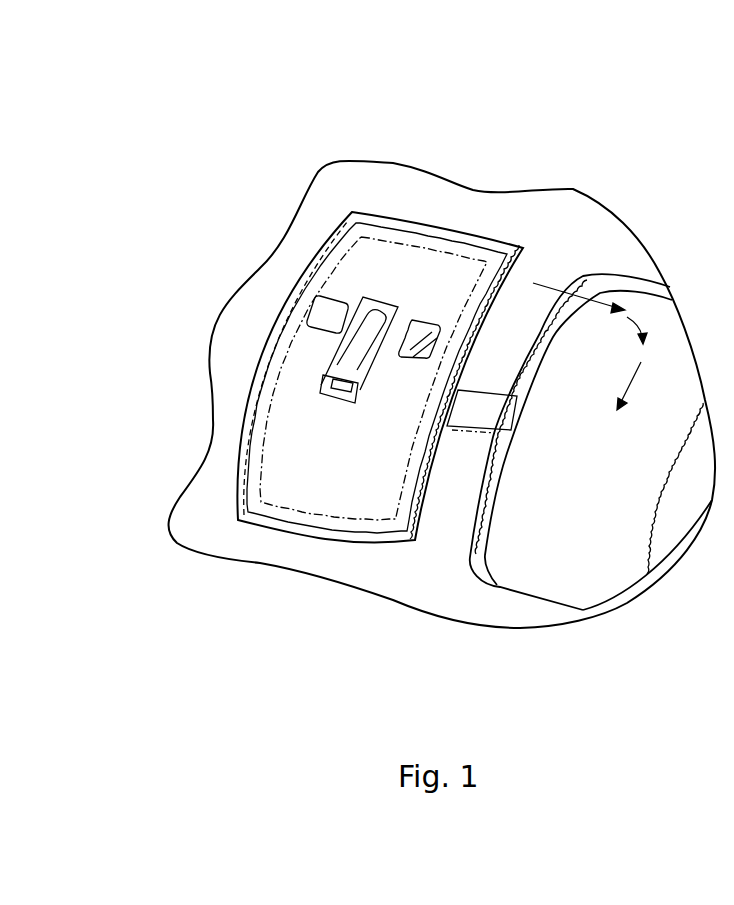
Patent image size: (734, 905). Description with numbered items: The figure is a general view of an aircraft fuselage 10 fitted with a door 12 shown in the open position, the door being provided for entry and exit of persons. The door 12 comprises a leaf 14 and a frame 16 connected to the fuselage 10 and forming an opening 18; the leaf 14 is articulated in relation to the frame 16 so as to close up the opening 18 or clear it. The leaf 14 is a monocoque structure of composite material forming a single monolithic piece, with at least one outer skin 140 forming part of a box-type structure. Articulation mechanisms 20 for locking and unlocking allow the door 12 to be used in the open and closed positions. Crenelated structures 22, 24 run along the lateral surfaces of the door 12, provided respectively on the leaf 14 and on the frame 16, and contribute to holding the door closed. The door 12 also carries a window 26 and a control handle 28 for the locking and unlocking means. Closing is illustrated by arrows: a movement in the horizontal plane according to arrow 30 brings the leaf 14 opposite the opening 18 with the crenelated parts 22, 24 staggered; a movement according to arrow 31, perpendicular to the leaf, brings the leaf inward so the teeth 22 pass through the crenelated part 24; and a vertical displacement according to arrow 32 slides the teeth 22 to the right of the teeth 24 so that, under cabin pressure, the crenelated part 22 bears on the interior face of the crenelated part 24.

The aircraft fuselage 10 is at (503, 207).
The door 12 is at (466, 655).
The leaf 14 is at (404, 561).
The frame 16 is at (507, 593).
The opening 18 is at (583, 466).
The articulation mechanisms 20 is at (470, 420).
The crenelated structure 22 is at (413, 540).
The crenelated structure 24 is at (477, 541).
The window 26 is at (437, 323).
The control handle 28 is at (370, 368).
The arrow 30 is at (560, 295).
The arrow 31 is at (627, 333).
The arrow 32 is at (641, 374).
The outer skin 140 is at (254, 521).